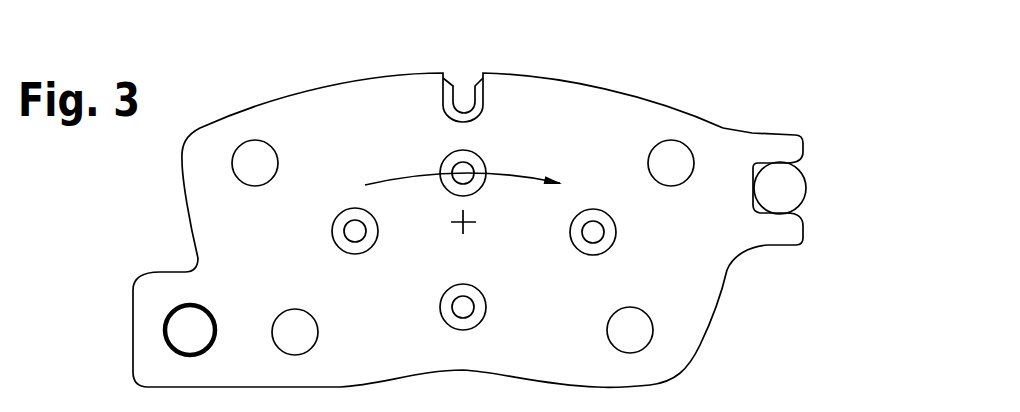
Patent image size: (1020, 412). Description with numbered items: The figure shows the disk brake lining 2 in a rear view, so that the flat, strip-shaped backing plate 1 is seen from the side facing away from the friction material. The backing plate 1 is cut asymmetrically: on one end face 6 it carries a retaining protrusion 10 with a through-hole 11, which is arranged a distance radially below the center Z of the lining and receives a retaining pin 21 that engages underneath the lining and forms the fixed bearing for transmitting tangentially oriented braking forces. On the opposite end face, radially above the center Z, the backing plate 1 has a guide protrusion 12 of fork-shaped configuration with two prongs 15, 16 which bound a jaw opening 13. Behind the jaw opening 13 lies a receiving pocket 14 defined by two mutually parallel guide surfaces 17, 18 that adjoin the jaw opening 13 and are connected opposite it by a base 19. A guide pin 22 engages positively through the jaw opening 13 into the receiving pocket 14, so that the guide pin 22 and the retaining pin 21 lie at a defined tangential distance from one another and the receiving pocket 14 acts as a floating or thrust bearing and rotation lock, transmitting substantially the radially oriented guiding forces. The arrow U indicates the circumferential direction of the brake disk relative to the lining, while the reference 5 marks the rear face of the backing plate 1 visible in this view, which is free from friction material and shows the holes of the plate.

The backing plate 1 is at (197, 124).
The disk brake lining 2 is at (268, 88).
The carrier plate body 5 is at (617, 165).
The end face 6 is at (190, 227).
The retaining protrusion 10 is at (173, 282).
The through-hole 11 is at (171, 308).
The guide protrusion 12 is at (738, 137).
The jaw opening 13 is at (800, 165).
The receiving pocket 14 is at (763, 218).
The prong 15 is at (770, 143).
The prong 16 is at (783, 237).
The guide surface 17 is at (803, 138).
The guide surface 18 is at (803, 233).
The base 19 is at (753, 203).
The retaining pin 21 is at (178, 333).
The guide pin 22 is at (797, 195).
The circumferential direction U is at (433, 176).
The center Z is at (472, 223).